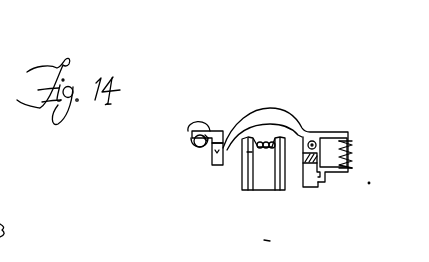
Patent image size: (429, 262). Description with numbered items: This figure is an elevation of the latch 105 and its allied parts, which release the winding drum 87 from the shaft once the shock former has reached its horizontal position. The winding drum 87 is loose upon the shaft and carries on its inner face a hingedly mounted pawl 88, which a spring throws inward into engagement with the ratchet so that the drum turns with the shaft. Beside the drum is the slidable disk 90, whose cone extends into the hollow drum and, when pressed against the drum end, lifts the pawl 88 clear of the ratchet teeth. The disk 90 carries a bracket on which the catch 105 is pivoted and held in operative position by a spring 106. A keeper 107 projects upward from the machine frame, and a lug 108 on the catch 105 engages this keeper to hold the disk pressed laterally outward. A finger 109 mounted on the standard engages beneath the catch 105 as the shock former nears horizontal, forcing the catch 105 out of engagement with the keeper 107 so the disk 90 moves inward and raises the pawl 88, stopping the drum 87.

The pawl 88 is at (263, 142).
The catch 105 is at (284, 116).
The lug 108 is at (229, 131).
The finger 109 is at (198, 148).
The keeper 107 is at (222, 166).
The winding drum 87 is at (268, 189).
The disk 90 is at (313, 187).
The spring 106 is at (346, 150).